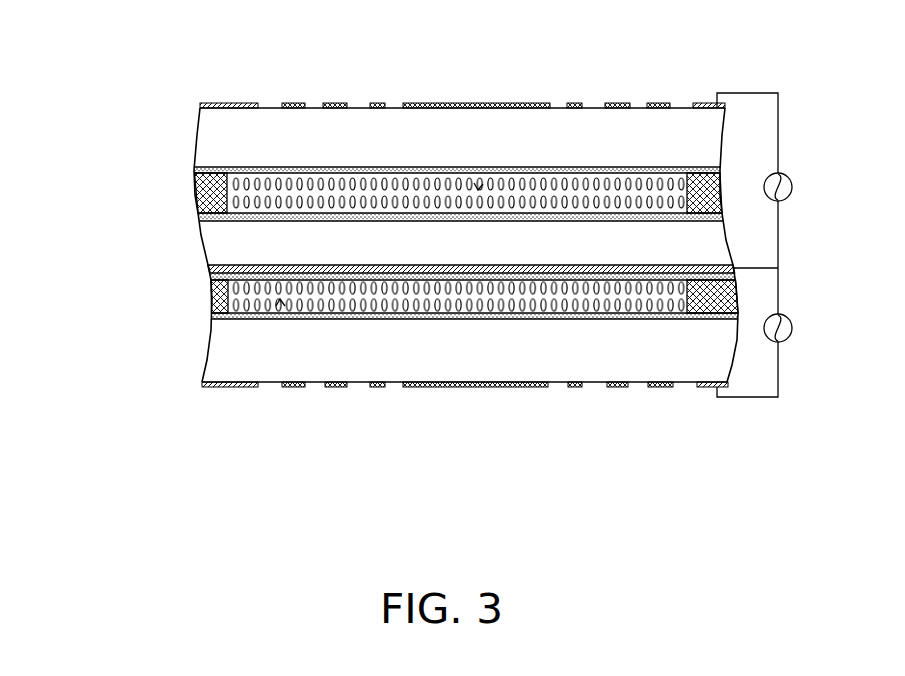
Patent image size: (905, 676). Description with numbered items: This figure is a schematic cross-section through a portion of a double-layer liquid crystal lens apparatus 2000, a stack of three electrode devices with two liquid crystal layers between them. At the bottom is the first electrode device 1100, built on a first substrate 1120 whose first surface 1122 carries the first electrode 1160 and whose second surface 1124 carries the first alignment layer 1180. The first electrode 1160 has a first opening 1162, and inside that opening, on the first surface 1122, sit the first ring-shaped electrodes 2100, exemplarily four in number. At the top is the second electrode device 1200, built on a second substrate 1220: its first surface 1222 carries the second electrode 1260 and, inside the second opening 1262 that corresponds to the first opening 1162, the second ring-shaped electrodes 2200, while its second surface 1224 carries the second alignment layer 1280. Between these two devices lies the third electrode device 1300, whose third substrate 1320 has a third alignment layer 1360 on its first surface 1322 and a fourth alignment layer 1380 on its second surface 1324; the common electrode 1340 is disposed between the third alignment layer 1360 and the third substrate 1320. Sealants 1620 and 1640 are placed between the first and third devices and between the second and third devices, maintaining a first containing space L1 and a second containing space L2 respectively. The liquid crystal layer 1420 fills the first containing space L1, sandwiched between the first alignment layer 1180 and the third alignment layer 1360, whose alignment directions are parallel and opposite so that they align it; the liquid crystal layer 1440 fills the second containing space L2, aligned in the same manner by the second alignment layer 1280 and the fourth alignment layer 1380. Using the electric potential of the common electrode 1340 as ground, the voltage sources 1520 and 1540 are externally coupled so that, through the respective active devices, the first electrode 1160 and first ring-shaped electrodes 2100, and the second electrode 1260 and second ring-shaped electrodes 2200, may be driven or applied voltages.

The double-layer liquid crystal lens apparatus 2000 is at (762, 442).
The first electrode device 1100 is at (110, 310).
The first substrate 1120 is at (215, 344).
The first surface of the first substrate 1122 is at (593, 388).
The second surface of the first substrate 1124 is at (493, 312).
The first electrode 1160 is at (202, 385).
The first opening 1162 is at (449, 390).
The first alignment layer 1180 is at (212, 315).
The second electrode device 1200 is at (110, 90).
The second substrate 1220 is at (205, 138).
The first surface of the second substrate 1222 is at (468, 103).
The second surface of the second substrate 1224 is at (264, 174).
The second electrode 1260 is at (200, 105).
The second opening 1262 is at (582, 99).
The second alignment layer 1280 is at (197, 169).
The third electrode device 1300 is at (110, 190).
The third substrate 1320 is at (203, 248).
The first surface of the third substrate 1322 is at (613, 268).
The second surface of the third substrate 1324 is at (614, 216).
The common electrode 1340 is at (208, 267).
The third alignment layer 1360 is at (209, 276).
The fourth alignment layer 1380 is at (197, 215).
The liquid crystal layer 1420 is at (503, 301).
The liquid crystal layer 1440 is at (523, 187).
The voltage source 1520 is at (785, 337).
The voltage source 1540 is at (785, 196).
The sealant 1620 is at (222, 305).
The sealant 1640 is at (215, 180).
The first ring-shaped electrode 2100 is at (413, 389).
The second ring-shaped electrode 2200 is at (413, 103).
The first containing space L1 is at (280, 304).
The second containing space L2 is at (478, 185).